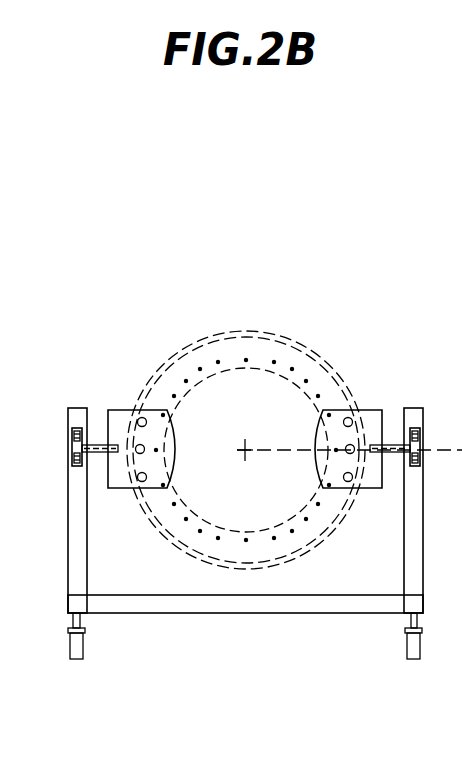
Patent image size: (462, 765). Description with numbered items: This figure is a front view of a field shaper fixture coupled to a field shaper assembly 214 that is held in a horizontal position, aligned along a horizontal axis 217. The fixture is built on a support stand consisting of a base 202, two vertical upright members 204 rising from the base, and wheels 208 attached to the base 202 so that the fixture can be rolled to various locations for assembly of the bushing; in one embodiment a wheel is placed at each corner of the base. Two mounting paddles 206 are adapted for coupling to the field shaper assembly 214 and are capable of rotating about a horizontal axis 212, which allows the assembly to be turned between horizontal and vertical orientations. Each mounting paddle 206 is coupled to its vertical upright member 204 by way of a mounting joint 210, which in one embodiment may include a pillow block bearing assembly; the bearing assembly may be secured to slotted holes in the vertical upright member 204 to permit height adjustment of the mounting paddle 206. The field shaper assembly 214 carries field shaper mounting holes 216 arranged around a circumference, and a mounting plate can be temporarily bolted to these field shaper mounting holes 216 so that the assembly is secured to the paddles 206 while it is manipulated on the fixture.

The base 202 is at (230, 614).
The vertical support member 204 is at (74, 408).
The mounting paddle 206 is at (124, 410).
The wheel 208 is at (75, 660).
The mounting joint 210 is at (72, 433).
The horizontal axis 212 is at (280, 451).
The field shaper assembly 214 is at (234, 332).
The field shaper mounting holes 216 is at (290, 370).
The horizontal axis 217 is at (240, 447).